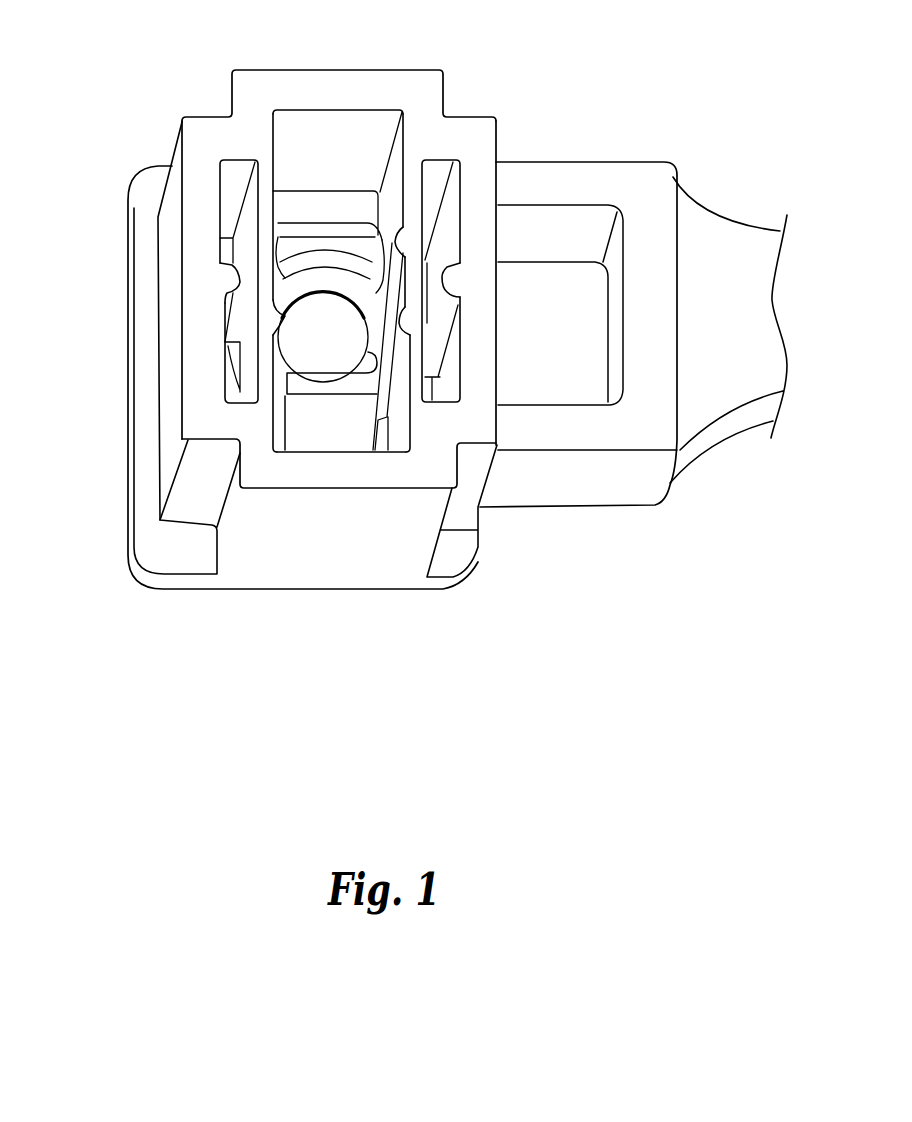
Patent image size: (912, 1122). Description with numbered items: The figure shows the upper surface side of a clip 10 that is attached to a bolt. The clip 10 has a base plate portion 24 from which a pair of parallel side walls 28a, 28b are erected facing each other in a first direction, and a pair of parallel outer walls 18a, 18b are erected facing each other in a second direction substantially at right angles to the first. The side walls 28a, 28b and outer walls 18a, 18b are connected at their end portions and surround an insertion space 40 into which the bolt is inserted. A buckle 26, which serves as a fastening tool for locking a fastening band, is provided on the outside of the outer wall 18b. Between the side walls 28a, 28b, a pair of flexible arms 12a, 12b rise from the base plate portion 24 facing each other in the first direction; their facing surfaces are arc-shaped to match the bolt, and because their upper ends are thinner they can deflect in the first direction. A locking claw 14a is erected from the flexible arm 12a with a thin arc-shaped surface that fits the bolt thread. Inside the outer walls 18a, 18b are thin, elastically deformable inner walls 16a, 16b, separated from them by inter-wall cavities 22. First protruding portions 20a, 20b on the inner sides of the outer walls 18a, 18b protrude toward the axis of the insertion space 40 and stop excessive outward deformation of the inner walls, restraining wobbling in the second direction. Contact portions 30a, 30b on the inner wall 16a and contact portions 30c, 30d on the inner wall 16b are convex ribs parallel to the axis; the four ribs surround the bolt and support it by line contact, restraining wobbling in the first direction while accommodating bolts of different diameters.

The clip 10 is at (383, 716).
The flexible arm 12a is at (303, 247).
The flexible arm 12b is at (343, 423).
The locking claw 14a is at (323, 282).
The inner wall 16a is at (282, 237).
The inner wall 16b is at (395, 207).
The outer wall 18a is at (163, 245).
The outer wall 18b is at (483, 362).
The first protruding portion 20a is at (233, 277).
The first protruding portion 20b is at (455, 278).
The inter-wall cavity 22 is at (232, 170).
The base plate portion 24 is at (165, 557).
The buckle 26 is at (650, 178).
The side wall 28a is at (338, 137).
The side wall 28b is at (387, 553).
The contact portion 30a is at (276, 245).
The contact portion 30b is at (280, 315).
The contact portion 30c is at (410, 238).
The contact portion 30d is at (413, 313).
The insertion space 40 is at (327, 348).